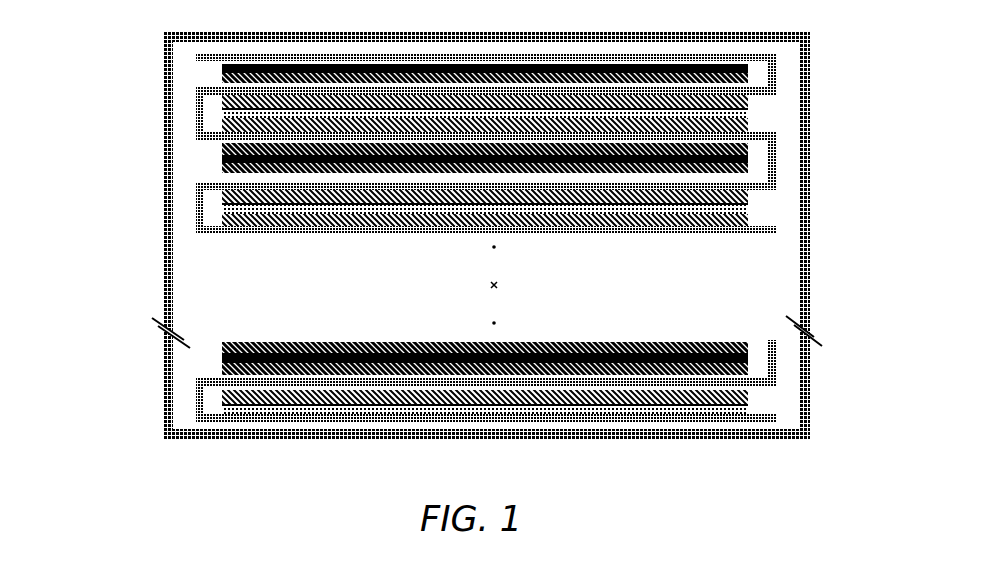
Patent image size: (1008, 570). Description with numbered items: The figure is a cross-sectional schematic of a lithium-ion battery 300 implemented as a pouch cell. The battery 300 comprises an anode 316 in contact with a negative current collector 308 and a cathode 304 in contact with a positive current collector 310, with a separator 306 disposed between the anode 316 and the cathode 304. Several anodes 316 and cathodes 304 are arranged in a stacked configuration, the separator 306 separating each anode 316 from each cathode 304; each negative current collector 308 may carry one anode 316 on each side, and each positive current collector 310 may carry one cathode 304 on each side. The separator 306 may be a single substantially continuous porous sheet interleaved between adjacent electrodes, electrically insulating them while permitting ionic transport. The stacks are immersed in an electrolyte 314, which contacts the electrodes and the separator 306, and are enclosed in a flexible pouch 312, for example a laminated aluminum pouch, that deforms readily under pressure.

The lithium-ion battery 300 is at (122, 233).
The cathode 304 is at (747, 100).
The separator 306 is at (196, 133).
The negative current collector 308 is at (222, 68).
The positive current collector 310 is at (747, 115).
The pouch 312 is at (812, 62).
The electrolyte 314 is at (798, 212).
The anode 316 is at (222, 88).